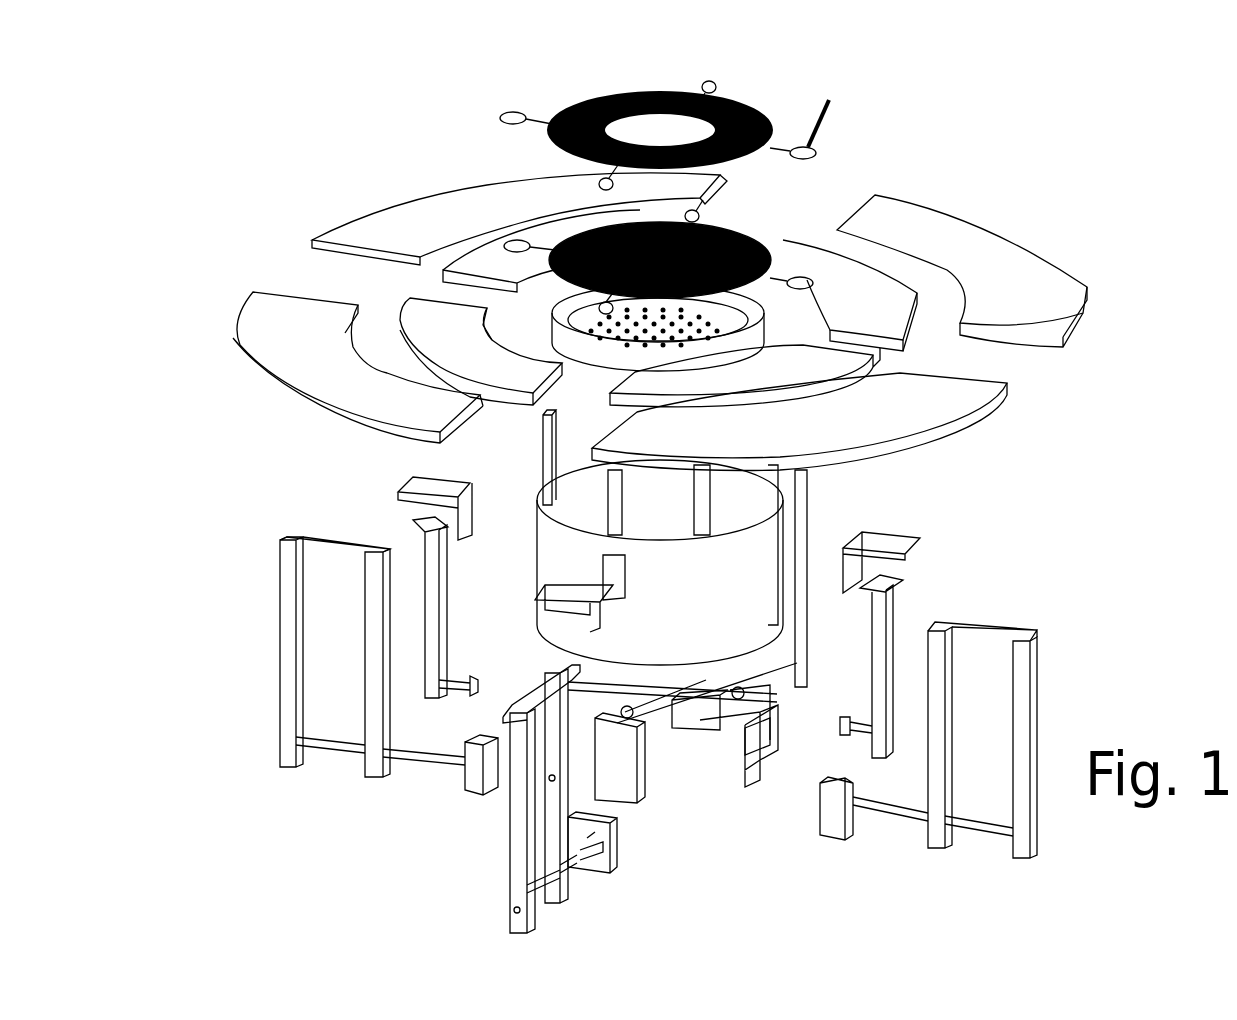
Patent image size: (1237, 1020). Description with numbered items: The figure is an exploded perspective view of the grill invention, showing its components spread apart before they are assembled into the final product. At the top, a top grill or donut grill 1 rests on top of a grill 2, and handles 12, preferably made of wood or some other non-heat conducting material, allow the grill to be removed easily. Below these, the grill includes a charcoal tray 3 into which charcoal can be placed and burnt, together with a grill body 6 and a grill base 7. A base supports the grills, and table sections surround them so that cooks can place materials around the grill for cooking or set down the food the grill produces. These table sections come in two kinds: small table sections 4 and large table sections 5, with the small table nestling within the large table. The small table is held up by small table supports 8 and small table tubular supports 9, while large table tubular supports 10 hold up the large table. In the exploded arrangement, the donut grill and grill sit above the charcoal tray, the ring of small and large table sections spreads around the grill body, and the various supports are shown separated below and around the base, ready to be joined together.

The top grill or donut grill 1 is at (680, 98).
The handles 12 is at (833, 109).
The grill 2 is at (745, 245).
The charcoal tray 3 is at (593, 343).
The small table sections 4 is at (873, 287).
The large table sections 5 is at (450, 200).
The grill body 6 is at (563, 555).
The grill base 7 is at (633, 745).
The small table supports 8 is at (882, 547).
The small table tubular supports 9 is at (882, 607).
The large table tubular supports 10 is at (1023, 663).